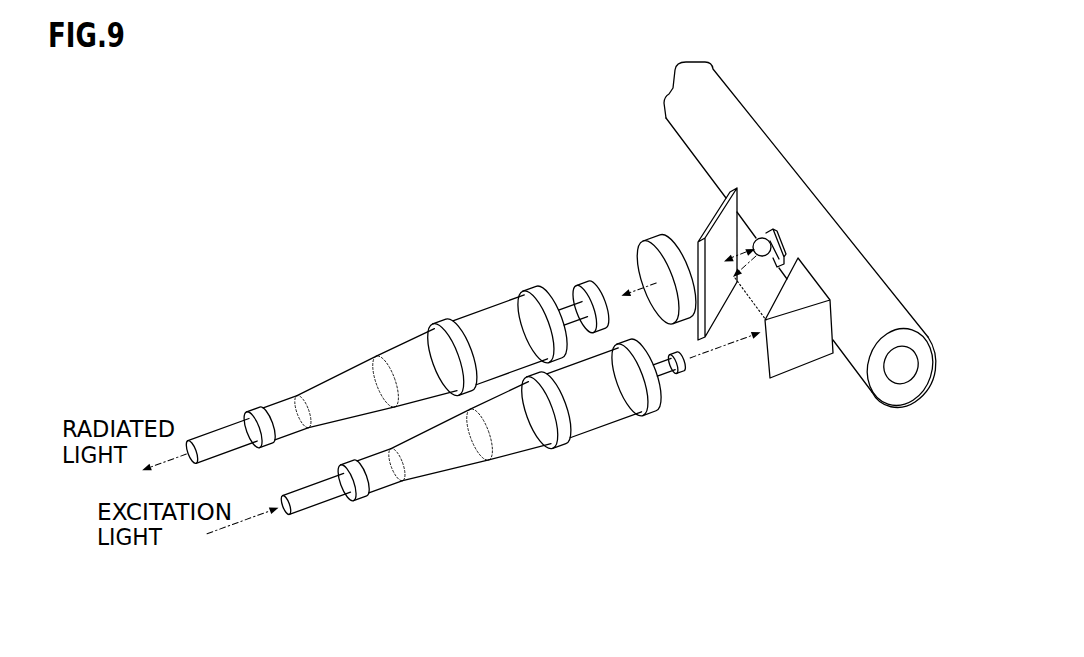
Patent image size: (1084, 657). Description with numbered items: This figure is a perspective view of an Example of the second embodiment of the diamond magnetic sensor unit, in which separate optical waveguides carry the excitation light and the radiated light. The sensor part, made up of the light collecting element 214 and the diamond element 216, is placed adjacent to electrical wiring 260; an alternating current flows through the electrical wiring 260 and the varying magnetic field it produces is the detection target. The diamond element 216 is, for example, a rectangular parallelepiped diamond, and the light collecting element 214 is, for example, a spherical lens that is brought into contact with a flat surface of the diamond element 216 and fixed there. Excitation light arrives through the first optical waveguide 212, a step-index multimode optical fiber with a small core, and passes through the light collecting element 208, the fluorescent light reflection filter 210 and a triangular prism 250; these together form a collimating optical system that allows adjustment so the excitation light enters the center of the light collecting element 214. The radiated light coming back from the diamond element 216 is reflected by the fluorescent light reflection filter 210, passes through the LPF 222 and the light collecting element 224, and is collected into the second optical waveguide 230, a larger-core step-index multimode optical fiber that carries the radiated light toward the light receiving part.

The light collecting element 208 is at (681, 373).
The fluorescent light reflection filter 210 is at (723, 311).
The first optical waveguide 212 is at (322, 514).
The light collecting element 214 is at (761, 237).
The diamond element 216 is at (775, 231).
The LPF 222 is at (637, 265).
The light collecting element 224 is at (576, 297).
The second optical waveguide 230 is at (218, 428).
The triangular prism 250 is at (795, 366).
The electrical wiring 260 is at (886, 285).